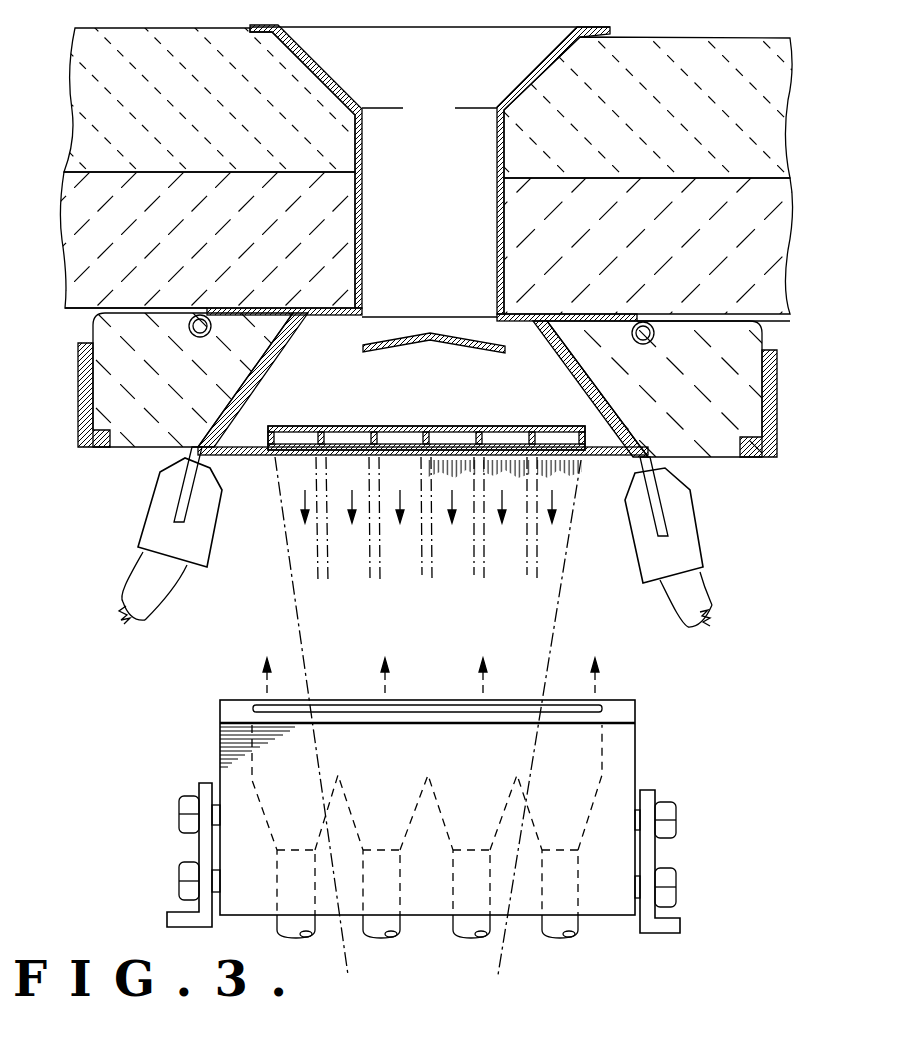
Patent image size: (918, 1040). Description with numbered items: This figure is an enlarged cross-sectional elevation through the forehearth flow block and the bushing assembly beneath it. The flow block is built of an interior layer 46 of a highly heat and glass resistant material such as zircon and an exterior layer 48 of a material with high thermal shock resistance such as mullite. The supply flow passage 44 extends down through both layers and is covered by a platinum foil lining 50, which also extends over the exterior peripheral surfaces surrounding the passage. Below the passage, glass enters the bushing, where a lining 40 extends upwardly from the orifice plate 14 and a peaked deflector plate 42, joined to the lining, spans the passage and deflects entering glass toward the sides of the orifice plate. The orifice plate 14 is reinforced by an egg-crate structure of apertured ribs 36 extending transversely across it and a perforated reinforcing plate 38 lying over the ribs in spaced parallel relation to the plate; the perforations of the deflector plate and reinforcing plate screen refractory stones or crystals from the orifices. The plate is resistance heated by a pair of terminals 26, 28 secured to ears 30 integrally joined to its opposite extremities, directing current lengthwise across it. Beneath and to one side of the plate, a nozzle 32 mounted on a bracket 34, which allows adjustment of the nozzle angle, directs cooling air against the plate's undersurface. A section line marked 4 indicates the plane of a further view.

The section line 4- 4 is at (256, 477).
The orifice plate 14 is at (363, 455).
The terminal 26 is at (145, 516).
The terminal 28 is at (703, 553).
The ear 30 is at (190, 479).
The nozzle 32 is at (632, 742).
The bracket 34 is at (680, 923).
The apertured rib 36 is at (368, 426).
The perforated reinforcing plate 38 is at (300, 426).
The lining 40 is at (577, 368).
The deflector plate 42 is at (432, 333).
The supply flow passage 44 is at (442, 210).
The interior layer 46 is at (773, 127).
The exterior layer 48 is at (777, 251).
The platinum foil lining 50 is at (536, 62).